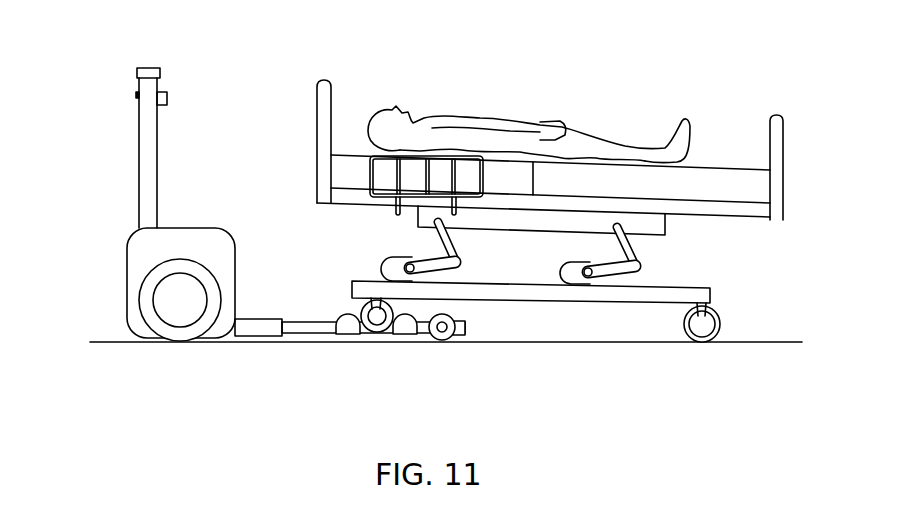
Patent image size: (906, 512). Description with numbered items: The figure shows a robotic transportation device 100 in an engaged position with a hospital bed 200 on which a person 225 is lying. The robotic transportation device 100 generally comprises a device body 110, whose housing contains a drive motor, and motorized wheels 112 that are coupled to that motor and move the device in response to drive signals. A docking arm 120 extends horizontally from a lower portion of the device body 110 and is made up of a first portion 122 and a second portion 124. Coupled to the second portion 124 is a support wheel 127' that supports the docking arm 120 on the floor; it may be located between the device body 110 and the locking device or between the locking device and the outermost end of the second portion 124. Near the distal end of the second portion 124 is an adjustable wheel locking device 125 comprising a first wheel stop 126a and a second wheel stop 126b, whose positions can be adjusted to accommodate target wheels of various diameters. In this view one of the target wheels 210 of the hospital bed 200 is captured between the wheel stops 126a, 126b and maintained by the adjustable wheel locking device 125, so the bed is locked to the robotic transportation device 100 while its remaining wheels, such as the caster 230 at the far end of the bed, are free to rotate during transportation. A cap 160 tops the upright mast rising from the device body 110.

The robotic transportation device 100 is at (113, 150).
The device body 110 is at (127, 273).
The motorized wheels 112 is at (183, 339).
The docking arms 120 is at (270, 243).
The first portion 122 is at (258, 318).
The second portion 124 is at (307, 321).
The adjustable wheel locking device 125 is at (377, 360).
The first wheel stop 126a is at (404, 334).
The second wheel stop 126b is at (349, 334).
The support wheel 127' is at (467, 344).
The mast cap / control unit 160 is at (160, 73).
The hospital bed 200 is at (744, 96).
The target wheels 210 is at (361, 305).
The person 225 is at (406, 113).
The bed caster 230 is at (720, 329).